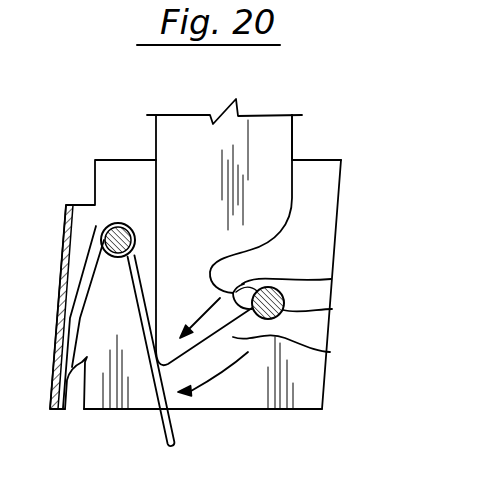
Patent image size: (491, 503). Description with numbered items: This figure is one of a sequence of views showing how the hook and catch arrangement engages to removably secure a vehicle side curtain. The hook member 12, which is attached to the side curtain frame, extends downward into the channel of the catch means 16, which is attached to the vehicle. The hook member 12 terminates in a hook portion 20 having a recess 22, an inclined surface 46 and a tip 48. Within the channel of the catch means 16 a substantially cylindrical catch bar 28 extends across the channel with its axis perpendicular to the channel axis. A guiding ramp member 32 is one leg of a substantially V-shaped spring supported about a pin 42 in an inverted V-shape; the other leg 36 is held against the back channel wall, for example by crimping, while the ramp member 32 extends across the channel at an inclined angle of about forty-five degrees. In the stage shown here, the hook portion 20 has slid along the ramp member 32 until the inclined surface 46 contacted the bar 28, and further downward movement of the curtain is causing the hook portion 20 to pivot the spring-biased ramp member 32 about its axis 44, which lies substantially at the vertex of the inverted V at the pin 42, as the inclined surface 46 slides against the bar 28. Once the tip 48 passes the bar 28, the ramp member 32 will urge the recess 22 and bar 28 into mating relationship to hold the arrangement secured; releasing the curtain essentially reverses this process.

The hook member 12 is at (300, 140).
The catch means 16 is at (345, 250).
The hook portion 20 is at (182, 188).
The recess 22 is at (220, 276).
The catch bar 28 is at (333, 303).
The guiding ramp member 32 is at (157, 291).
The other leg 36 is at (85, 279).
The pin 42 is at (118, 223).
The axis 44 is at (118, 259).
The inclined surface 46 is at (330, 353).
The tip 48 is at (332, 275).